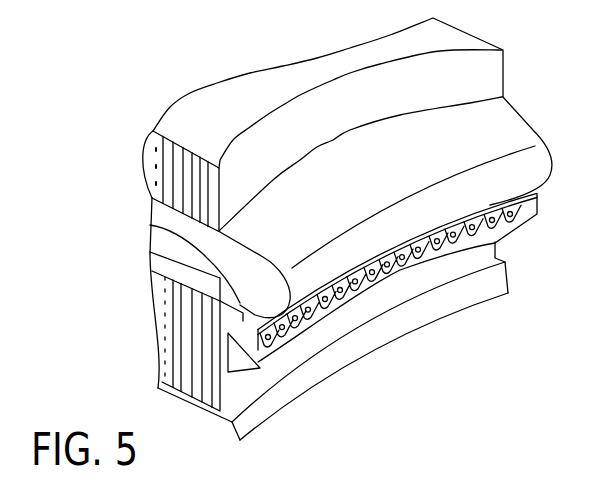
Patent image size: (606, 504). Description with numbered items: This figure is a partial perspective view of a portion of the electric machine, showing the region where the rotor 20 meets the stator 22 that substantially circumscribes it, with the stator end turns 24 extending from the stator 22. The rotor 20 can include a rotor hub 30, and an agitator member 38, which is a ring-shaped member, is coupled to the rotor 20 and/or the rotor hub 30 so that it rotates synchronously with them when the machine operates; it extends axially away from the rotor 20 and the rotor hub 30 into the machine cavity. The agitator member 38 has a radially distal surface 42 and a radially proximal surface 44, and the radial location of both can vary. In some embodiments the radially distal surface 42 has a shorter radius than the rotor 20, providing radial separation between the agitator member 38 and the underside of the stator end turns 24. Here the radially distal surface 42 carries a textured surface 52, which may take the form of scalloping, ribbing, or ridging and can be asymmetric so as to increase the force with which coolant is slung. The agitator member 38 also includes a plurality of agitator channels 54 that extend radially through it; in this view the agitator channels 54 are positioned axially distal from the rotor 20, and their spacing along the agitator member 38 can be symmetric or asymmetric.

The rotor 20 is at (180, 360).
The stator 22 is at (477, 83).
The stator end turns 24 is at (493, 137).
The rotor hub 30 is at (230, 423).
The agitator member 38 is at (367, 297).
The radially distal surface 42 is at (150, 223).
The radially proximal surface 44 is at (235, 310).
The textured surface 52 is at (517, 203).
The agitator channels 54 is at (446, 242).